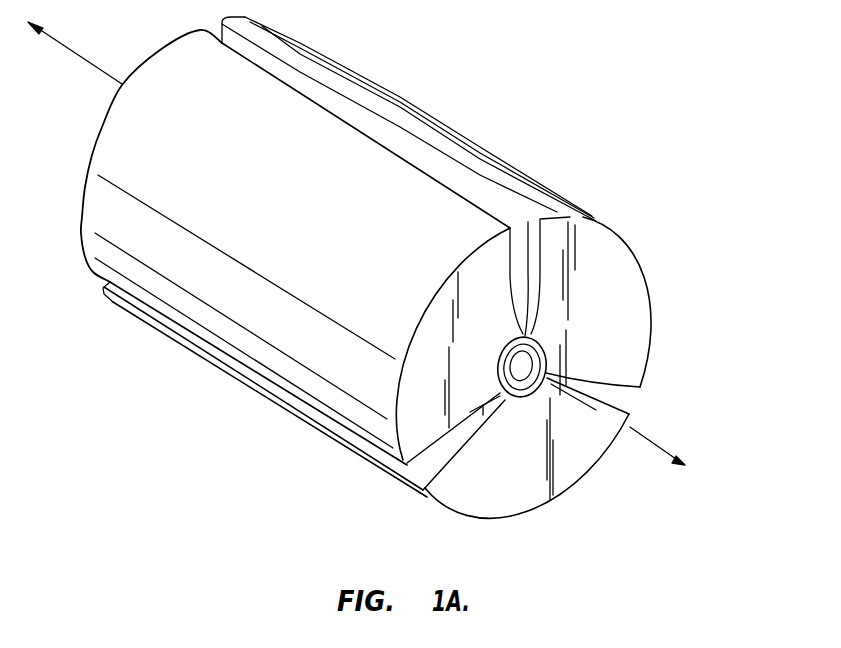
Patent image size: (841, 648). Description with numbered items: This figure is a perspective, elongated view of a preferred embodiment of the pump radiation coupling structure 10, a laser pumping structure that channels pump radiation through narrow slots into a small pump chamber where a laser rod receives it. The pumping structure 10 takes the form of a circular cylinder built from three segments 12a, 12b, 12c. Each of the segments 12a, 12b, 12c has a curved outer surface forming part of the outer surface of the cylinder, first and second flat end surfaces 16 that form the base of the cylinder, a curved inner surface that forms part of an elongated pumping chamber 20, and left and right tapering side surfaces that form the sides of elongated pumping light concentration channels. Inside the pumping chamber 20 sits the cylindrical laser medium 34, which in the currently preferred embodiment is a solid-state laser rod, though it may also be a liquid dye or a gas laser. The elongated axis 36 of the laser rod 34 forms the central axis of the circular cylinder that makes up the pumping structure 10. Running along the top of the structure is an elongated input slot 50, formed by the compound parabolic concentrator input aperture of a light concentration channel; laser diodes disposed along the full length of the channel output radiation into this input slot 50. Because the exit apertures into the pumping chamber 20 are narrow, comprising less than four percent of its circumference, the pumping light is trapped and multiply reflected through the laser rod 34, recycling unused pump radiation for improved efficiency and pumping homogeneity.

The pump radiation coupling structure 10 is at (547, 95).
The segment 12a is at (651, 328).
The segment 12b is at (552, 503).
The segment 12c is at (345, 435).
The flat end surface 16 is at (523, 480).
The elongated pumping chamber 20 is at (622, 400).
The cylindrical laser medium 34 is at (528, 222).
The elongated axis 36 is at (74, 50).
The elongated input slot 50 is at (381, 130).